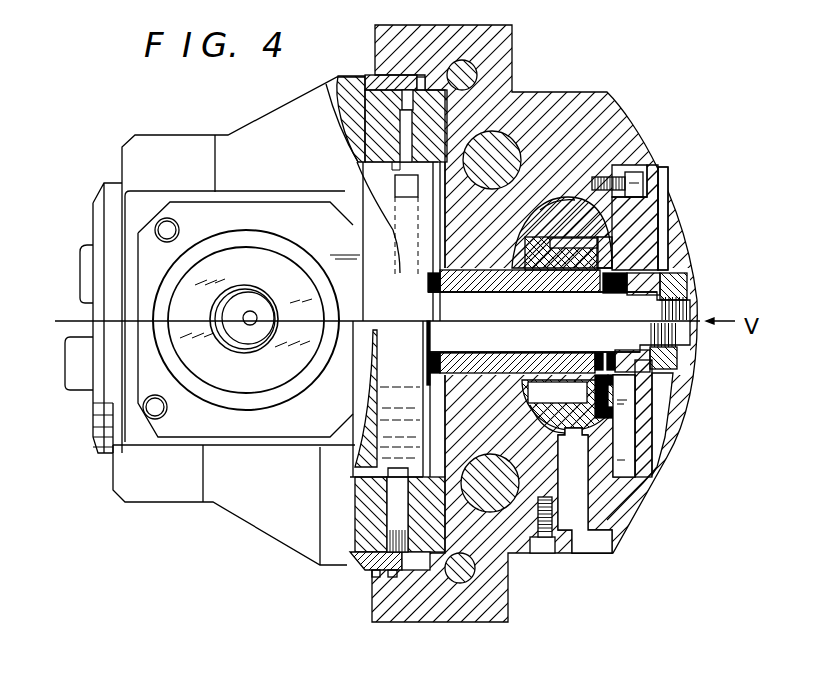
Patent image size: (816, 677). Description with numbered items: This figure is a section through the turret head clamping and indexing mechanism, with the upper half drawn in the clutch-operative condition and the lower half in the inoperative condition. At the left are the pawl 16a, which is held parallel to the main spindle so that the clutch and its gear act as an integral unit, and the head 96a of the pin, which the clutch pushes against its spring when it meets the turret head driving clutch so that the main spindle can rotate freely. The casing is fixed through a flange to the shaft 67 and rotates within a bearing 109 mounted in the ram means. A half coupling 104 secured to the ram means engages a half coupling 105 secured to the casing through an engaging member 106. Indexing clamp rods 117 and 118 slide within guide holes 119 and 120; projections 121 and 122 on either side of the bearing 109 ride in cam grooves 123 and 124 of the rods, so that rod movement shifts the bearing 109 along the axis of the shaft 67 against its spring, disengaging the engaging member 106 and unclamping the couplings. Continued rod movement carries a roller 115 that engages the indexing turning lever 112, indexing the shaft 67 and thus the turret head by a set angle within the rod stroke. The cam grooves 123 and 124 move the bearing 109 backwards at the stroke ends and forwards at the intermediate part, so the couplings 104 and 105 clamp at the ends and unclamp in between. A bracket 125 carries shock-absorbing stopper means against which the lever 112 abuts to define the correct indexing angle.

The pawl 16a is at (82, 302).
The head of the pin 96a is at (75, 323).
The shaft 67 is at (516, 311).
The half coupling 104 is at (433, 515).
The half coupling 105 is at (360, 512).
The engaging member 106 is at (397, 543).
The bearing 109 is at (473, 363).
The indexing turning lever 112 is at (643, 430).
The roller 115 is at (623, 360).
The indexing clamp rod 117 is at (546, 232).
The indexing clamp rod 118 is at (556, 432).
The guide hole 119 is at (566, 206).
The guide hole 120 is at (566, 436).
The projection 121 is at (588, 256).
The projection 122 is at (552, 398).
The cam groove 123 is at (545, 247).
The cam groove 124 is at (530, 396).
The bracket 125 is at (647, 213).